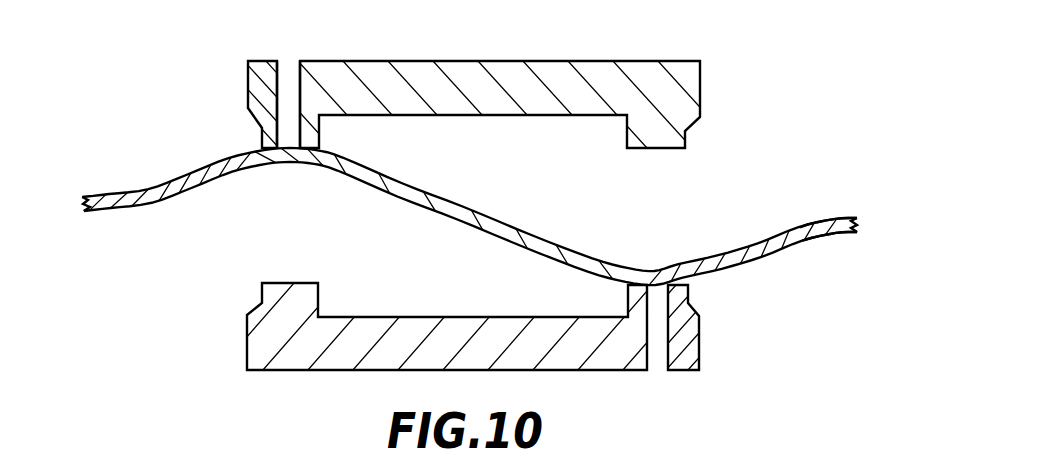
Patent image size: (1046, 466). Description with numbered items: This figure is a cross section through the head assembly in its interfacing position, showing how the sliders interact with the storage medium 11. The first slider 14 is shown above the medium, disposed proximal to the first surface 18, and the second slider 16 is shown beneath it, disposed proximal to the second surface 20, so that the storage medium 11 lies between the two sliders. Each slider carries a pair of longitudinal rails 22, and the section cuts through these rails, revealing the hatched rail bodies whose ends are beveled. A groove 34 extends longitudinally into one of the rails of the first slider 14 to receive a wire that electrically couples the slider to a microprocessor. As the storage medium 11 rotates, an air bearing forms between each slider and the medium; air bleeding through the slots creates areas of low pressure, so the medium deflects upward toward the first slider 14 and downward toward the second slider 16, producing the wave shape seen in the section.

The data storage medium 11 is at (832, 225).
The first slider 14 is at (585, 67).
The second slider 16 is at (572, 362).
The first surface 18 is at (492, 218).
The second surface 20 is at (823, 238).
The longitudinal rails 22 is at (267, 140).
The groove 34 is at (289, 68).